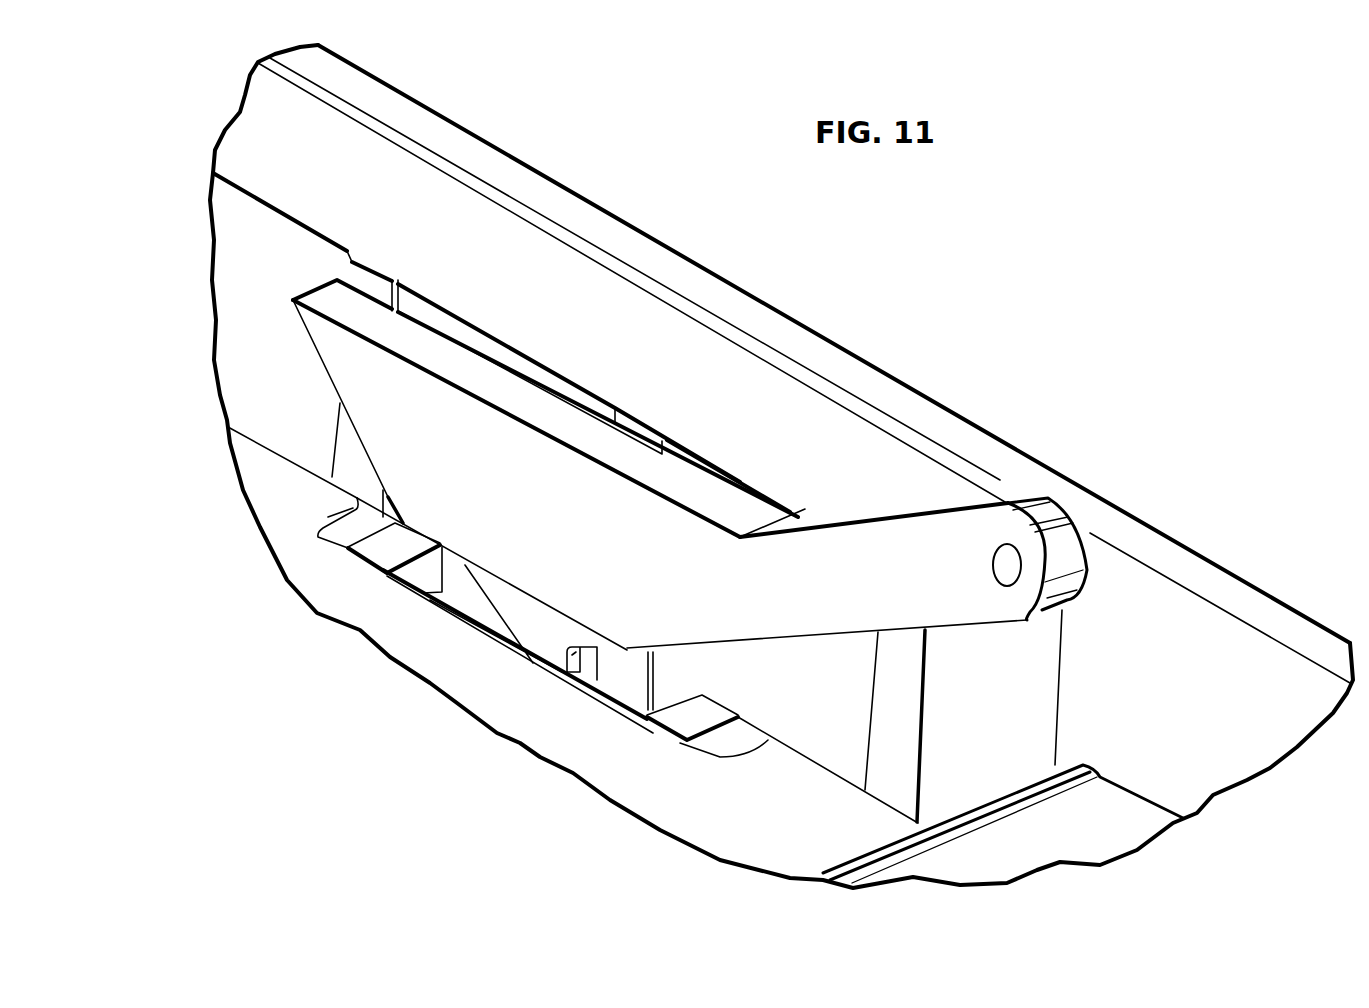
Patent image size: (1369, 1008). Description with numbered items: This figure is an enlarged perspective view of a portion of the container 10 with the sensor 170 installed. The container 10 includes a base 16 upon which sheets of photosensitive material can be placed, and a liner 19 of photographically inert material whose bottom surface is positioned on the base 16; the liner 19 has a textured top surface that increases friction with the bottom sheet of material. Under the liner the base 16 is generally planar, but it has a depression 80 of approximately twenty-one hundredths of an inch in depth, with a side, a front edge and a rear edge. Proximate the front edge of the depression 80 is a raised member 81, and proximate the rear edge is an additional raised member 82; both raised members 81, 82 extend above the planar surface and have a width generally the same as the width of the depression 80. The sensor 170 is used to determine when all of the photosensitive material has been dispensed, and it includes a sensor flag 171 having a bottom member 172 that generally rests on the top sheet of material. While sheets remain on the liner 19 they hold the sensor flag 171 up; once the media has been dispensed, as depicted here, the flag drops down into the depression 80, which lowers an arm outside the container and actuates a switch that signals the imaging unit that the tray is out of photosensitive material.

The container 10 is at (574, 172).
The base 16 is at (347, 527).
The liner 19 is at (709, 819).
The depression 80 is at (455, 610).
The raised member 81 is at (673, 723).
The raised member 82 is at (377, 555).
The sensor 170 is at (868, 540).
The sensor flag 171 is at (358, 395).
The bottom member 172 is at (552, 652).